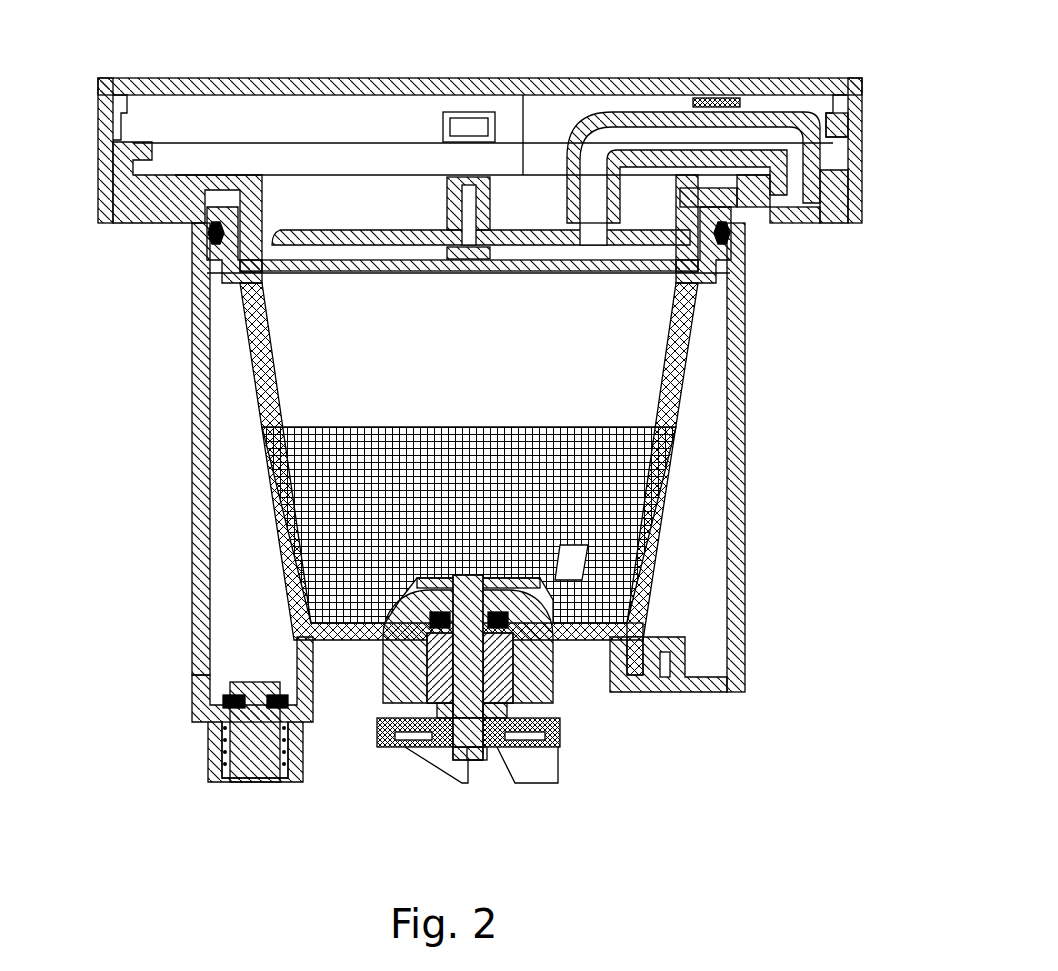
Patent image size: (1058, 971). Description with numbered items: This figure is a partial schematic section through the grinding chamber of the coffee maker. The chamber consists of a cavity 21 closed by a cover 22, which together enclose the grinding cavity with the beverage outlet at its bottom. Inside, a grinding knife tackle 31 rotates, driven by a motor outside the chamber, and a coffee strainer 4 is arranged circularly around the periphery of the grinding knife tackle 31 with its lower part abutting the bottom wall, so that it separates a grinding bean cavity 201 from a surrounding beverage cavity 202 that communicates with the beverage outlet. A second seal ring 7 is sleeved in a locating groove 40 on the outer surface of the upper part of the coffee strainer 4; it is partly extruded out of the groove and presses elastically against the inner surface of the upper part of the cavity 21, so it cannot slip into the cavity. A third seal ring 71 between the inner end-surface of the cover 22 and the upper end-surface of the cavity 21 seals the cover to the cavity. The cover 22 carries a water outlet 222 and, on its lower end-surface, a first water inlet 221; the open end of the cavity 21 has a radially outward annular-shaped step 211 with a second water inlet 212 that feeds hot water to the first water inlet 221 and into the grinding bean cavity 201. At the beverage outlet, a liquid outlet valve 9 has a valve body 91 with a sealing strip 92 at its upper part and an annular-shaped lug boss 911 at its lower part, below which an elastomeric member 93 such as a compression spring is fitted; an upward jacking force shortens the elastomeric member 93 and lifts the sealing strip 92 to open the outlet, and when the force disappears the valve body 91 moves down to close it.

The cover 22 is at (330, 78).
The water outlet 222 is at (590, 176).
The first water inlet 221 is at (800, 182).
The annular-shaped step 211 is at (830, 215).
The second water inlet 212 is at (795, 226).
The cavity 21 is at (745, 382).
The coffee strainer 4 is at (660, 468).
The grinding knife tackle 31 is at (575, 565).
The grinding bean cavity 201 is at (352, 372).
The beverage cavity 202 is at (226, 543).
The flange 71 is at (152, 222).
The second seal ring 7 is at (207, 252).
The locating groove 40 is at (211, 262).
The liquid outlet valve 9 is at (246, 740).
The valve body 91 is at (222, 738).
The sealing strip 92 is at (228, 700).
The elastomeric member 93 is at (225, 765).
The annular-shaped lug boss 911 is at (303, 775).